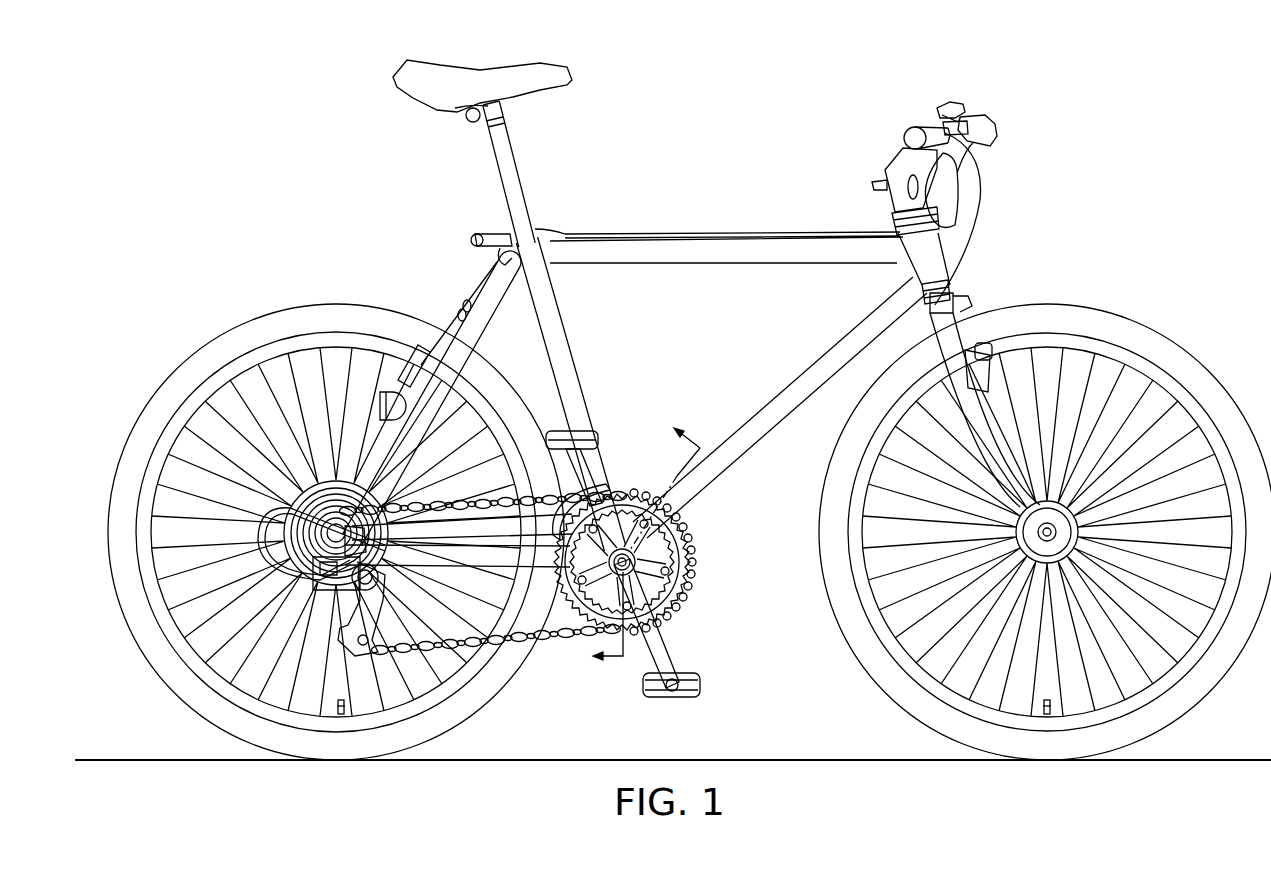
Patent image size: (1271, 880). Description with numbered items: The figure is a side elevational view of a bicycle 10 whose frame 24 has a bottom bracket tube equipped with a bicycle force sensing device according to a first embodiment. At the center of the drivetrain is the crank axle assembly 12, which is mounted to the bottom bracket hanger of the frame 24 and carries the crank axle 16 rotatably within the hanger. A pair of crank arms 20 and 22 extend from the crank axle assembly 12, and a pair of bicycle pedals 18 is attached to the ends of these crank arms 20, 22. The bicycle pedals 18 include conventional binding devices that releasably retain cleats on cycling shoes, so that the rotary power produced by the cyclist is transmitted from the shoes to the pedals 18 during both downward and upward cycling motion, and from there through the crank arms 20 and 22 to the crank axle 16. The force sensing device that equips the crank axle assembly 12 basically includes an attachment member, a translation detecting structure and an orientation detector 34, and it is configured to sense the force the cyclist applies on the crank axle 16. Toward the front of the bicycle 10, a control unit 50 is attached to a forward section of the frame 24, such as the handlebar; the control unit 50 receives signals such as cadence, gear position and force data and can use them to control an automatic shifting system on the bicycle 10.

The bicycle 10 is at (673, 395).
The crank axle assembly 12 is at (556, 593).
The crank axle 16 is at (646, 546).
The bicycle pedals 18 is at (692, 685).
The crank arm 20 is at (645, 655).
The crank arm 22 is at (598, 457).
The bicycle frame 24 is at (792, 396).
The orientation detector 34 is at (600, 480).
The control unit 50 is at (937, 105).